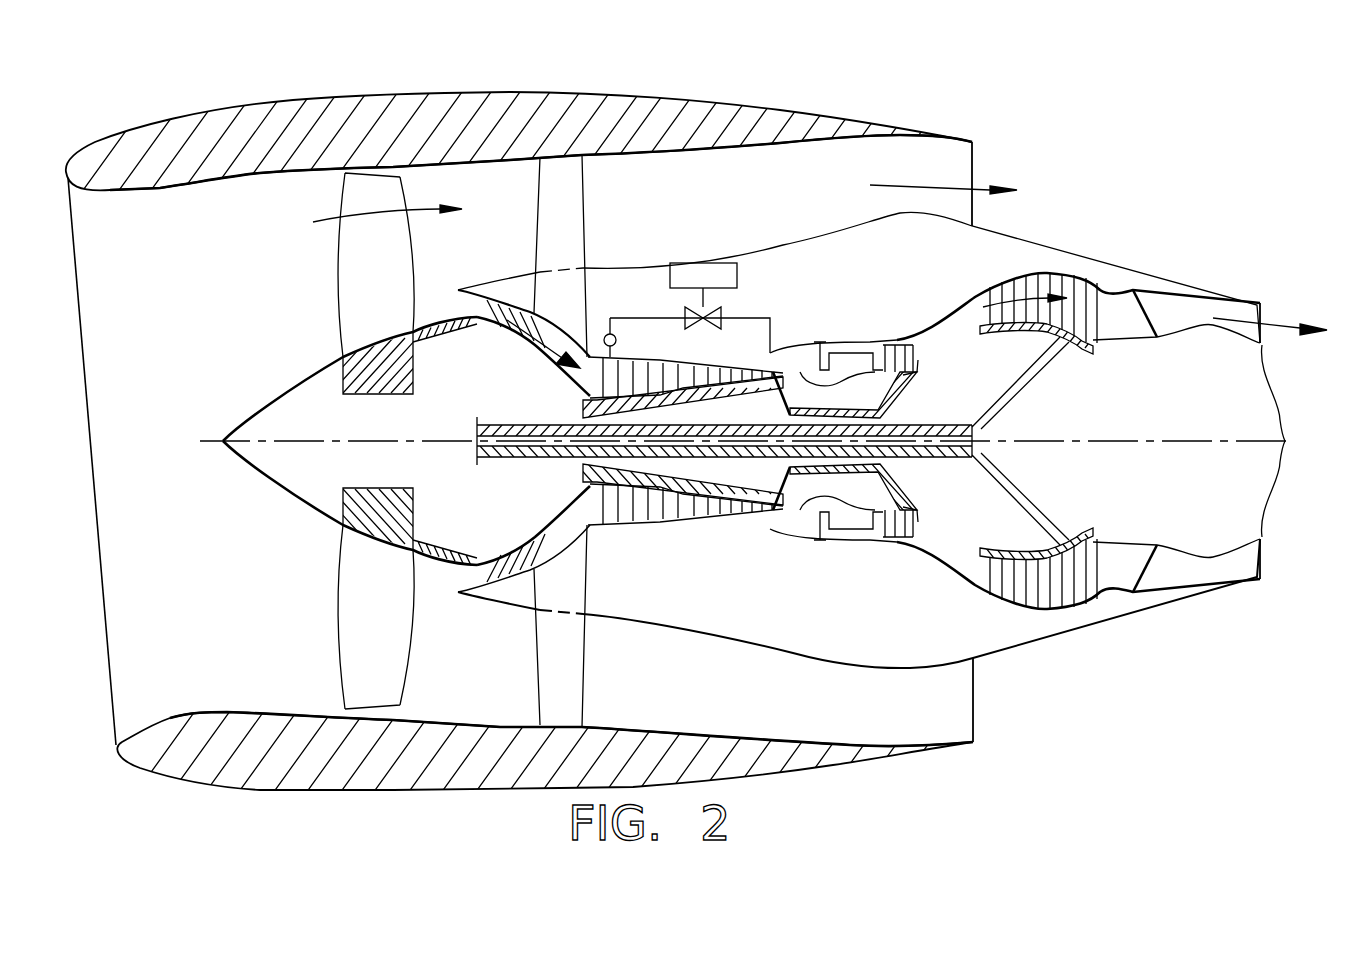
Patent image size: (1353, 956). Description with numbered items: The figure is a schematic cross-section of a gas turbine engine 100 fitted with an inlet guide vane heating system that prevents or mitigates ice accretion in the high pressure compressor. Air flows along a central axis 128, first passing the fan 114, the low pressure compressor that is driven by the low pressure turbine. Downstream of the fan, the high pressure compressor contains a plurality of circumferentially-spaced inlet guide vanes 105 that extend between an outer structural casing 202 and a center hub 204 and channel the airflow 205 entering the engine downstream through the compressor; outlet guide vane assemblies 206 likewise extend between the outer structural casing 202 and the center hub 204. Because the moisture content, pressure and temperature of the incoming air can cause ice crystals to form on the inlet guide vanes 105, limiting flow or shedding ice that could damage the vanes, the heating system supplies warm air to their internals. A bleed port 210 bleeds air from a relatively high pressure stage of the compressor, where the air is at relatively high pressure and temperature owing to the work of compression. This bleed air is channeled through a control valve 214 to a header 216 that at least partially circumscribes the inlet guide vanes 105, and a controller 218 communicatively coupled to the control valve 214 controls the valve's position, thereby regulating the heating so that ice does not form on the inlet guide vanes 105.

The gas turbine engine 100 is at (1160, 126).
The fan 114 is at (360, 280).
The inlet guide vanes 105 is at (607, 383).
The central axis 128 is at (1113, 437).
The outer structural casing 202 is at (693, 363).
The center hub 204 is at (565, 377).
The airflow 205 is at (543, 342).
The outlet guide vane assemblies 206 is at (813, 363).
The bleed port 210 is at (772, 358).
The control valve 214 is at (683, 307).
The header 216 is at (607, 333).
The controller 218 is at (692, 268).